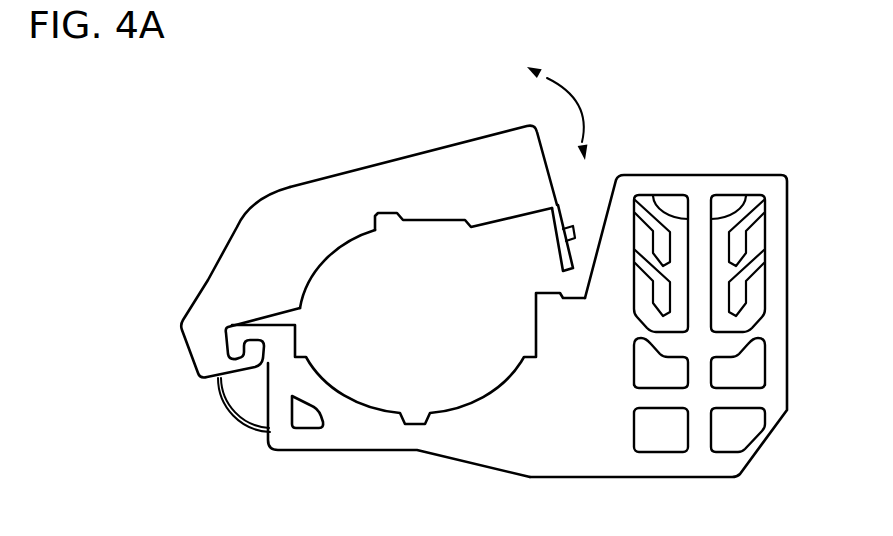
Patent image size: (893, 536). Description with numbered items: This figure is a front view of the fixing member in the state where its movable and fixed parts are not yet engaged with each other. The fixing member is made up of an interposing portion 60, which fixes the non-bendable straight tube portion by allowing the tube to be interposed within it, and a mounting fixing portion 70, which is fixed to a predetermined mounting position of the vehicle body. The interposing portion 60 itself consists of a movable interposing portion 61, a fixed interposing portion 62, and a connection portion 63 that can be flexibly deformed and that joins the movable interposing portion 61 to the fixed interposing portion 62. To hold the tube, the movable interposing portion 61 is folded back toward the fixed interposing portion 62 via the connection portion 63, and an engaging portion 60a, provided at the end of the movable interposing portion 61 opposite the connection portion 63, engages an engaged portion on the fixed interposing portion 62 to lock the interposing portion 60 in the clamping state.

The interposing portion 60 is at (385, 121).
The engaging portion 60a is at (579, 226).
The movable interposing portion 61 is at (255, 186).
The fixed interposing portion 62 is at (368, 460).
The connection portion 63 is at (231, 418).
The mounting fixing portion 70 is at (746, 140).